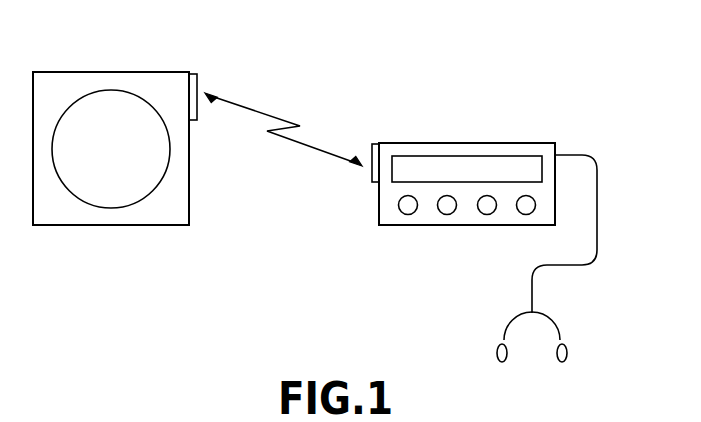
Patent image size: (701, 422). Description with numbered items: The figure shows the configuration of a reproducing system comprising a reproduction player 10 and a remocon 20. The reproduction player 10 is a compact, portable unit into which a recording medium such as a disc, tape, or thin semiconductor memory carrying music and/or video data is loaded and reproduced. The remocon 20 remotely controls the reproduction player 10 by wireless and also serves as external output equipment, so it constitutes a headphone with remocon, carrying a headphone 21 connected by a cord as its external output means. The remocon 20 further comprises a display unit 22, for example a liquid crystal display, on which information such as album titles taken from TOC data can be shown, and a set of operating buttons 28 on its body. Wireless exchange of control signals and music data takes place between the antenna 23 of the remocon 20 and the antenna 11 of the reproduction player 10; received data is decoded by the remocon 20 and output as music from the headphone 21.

The reproduction player 10 is at (117, 72).
The antenna 11 is at (195, 88).
The remocon 20 is at (561, 125).
The headphone 21 is at (570, 332).
The display unit 22 is at (473, 168).
The antenna 23 is at (373, 153).
The operation buttons 28 is at (428, 212).